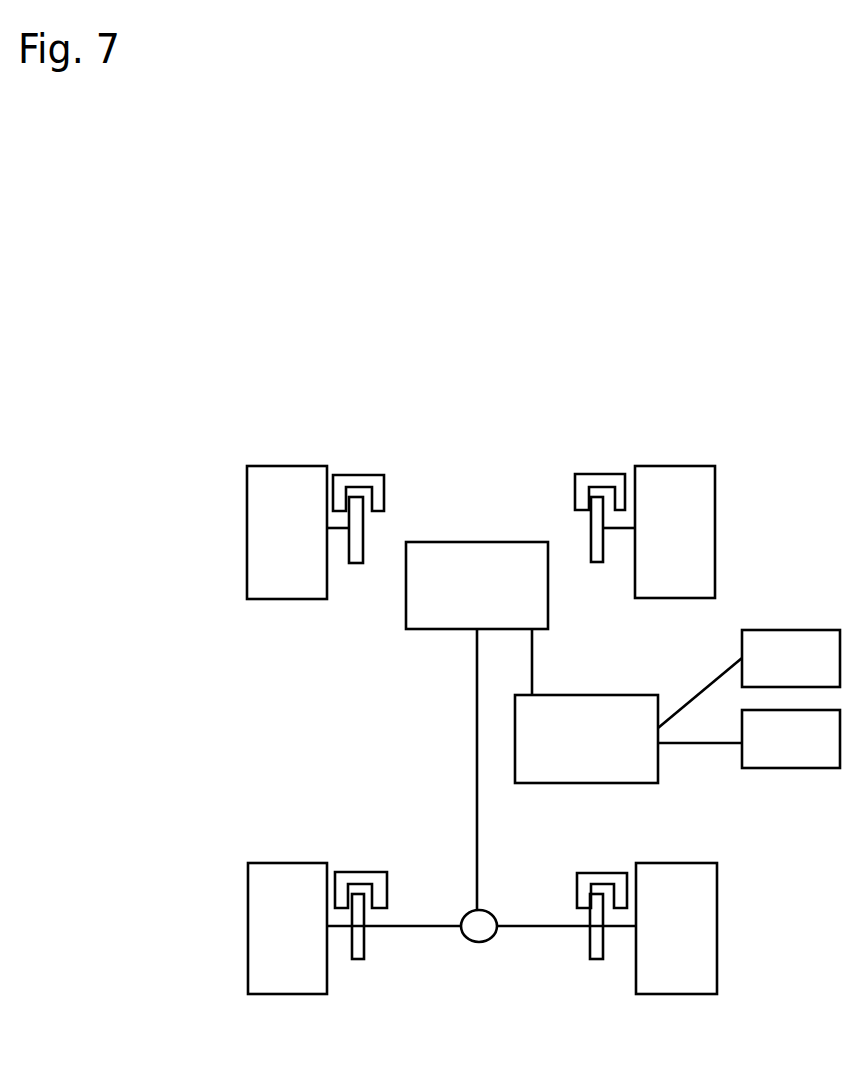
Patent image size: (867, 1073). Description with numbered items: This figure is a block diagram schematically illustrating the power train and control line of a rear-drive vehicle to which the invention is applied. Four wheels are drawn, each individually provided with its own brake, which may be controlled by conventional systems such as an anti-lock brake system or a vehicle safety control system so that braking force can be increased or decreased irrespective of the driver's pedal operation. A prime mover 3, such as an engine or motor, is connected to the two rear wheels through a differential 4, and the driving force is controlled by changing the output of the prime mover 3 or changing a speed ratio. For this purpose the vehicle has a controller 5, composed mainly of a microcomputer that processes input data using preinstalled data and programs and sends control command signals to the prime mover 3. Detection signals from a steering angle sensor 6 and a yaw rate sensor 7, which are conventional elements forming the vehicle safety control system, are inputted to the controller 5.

The prime mover 3 is at (477, 725).
The differential 4 is at (479, 942).
The controller 5 is at (567, 753).
The steering angle sensor 6 is at (779, 675).
The yaw rate sensor 7 is at (778, 755).